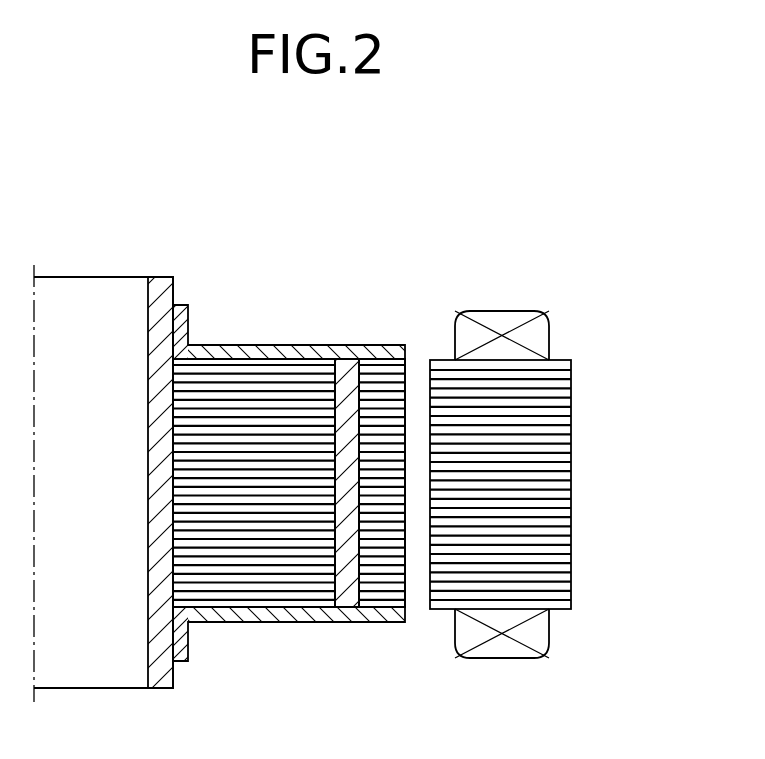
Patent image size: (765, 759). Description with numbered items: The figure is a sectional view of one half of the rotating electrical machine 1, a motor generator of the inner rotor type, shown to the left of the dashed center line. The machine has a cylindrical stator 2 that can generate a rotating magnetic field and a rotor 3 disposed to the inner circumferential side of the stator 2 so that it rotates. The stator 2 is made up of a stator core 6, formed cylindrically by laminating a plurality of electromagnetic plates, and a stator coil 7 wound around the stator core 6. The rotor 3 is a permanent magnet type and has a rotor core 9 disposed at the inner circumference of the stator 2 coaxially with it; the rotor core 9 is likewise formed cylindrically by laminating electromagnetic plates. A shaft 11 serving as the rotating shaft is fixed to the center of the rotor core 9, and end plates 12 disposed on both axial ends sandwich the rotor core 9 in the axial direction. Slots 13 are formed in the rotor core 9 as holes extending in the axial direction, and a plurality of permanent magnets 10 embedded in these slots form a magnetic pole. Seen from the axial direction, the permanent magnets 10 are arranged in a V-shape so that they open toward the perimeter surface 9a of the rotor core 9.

The rotating electrical machine 1 is at (590, 194).
The stator 2 is at (576, 371).
The rotor 3 is at (328, 360).
The stator core 6 is at (560, 468).
The stator coil 7 is at (515, 320).
The rotor core 9 is at (392, 390).
The perimeter surface 9a is at (402, 577).
The permanent magnets 10 is at (343, 583).
The shaft 11 is at (160, 293).
The end plates 12 is at (283, 352).
The slots 13 is at (355, 557).